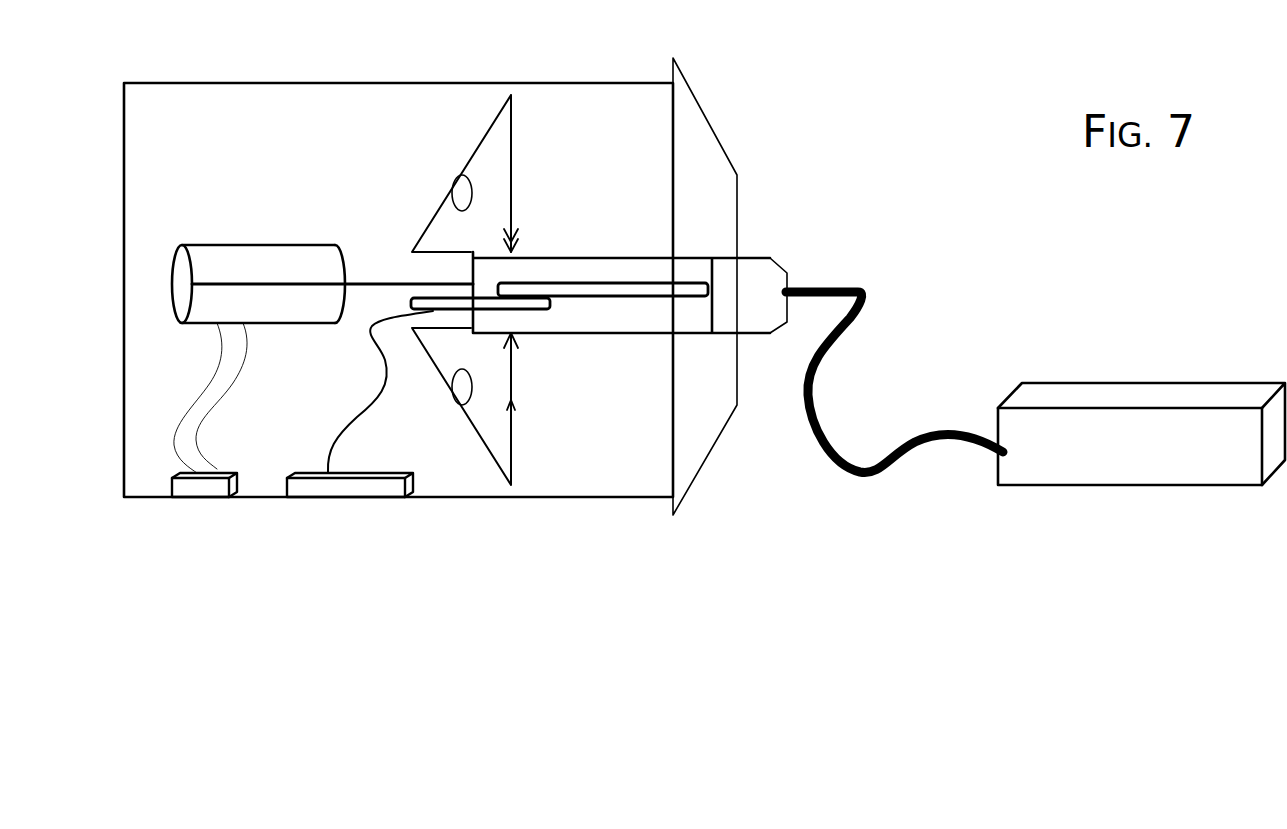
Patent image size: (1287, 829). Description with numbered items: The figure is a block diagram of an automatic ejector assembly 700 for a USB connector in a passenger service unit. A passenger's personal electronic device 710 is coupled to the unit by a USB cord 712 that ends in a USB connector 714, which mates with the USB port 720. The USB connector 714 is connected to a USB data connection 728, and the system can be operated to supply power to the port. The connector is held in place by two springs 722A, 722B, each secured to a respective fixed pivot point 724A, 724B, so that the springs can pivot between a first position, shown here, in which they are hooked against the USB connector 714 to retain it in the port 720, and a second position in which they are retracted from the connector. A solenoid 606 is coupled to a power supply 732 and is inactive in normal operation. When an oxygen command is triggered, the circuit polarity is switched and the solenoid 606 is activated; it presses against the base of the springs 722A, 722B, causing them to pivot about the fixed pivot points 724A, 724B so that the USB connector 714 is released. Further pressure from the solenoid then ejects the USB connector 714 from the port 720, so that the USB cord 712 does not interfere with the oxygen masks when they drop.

The automatic ejector assembly 700 is at (737, 98).
The solenoid 606 is at (190, 246).
The USB port 720 is at (558, 256).
The spring 722A is at (514, 165).
The spring 722B is at (512, 404).
The fixed pivot point 724A is at (457, 190).
The fixed pivot point 724B is at (460, 408).
The USB connector 714 is at (773, 258).
The USB cord 712 is at (862, 290).
The personal electronic device 710 is at (1145, 383).
The power supply 732 is at (205, 497).
The USB data connection 728 is at (372, 497).